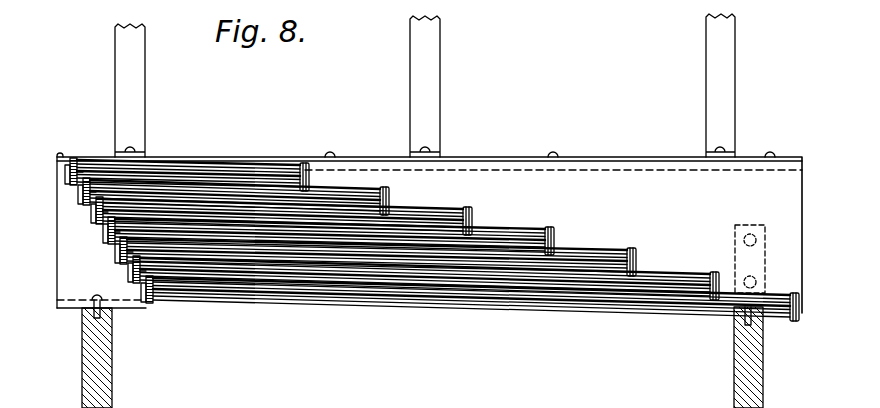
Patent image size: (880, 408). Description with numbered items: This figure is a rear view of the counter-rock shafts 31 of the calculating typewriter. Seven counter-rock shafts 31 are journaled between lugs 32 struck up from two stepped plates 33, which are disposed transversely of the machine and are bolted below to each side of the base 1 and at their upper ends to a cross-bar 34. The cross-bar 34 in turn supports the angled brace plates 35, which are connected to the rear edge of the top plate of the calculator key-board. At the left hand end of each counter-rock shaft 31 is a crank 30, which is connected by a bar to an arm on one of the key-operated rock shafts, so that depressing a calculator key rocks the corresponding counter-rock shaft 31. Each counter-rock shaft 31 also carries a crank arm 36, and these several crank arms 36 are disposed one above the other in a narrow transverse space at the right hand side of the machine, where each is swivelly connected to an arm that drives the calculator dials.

The base 1 is at (82, 376).
The crank 30 is at (303, 163).
The counter-rock shaft 31 is at (242, 193).
The lugs 32 is at (78, 198).
The stepped plates 33 is at (586, 185).
The cross-bar 34 is at (492, 163).
The angled brace plates 35 is at (140, 138).
The crank arm 36 is at (105, 228).